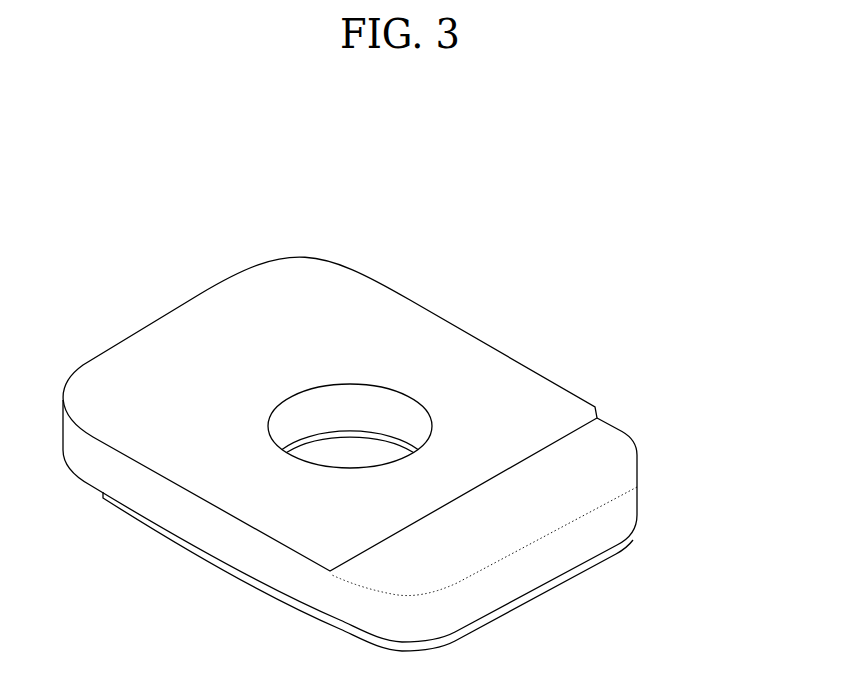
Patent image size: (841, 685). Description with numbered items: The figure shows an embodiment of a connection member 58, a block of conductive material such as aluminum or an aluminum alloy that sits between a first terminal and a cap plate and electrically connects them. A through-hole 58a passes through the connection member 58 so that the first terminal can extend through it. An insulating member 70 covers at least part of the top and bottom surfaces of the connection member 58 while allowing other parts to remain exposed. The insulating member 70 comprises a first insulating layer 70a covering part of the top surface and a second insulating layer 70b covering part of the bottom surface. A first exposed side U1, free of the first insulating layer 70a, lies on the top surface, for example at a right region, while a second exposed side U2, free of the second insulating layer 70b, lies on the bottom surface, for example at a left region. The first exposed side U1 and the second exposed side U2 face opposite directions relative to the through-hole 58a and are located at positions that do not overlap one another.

The connection member 58 is at (363, 451).
The through-hole 58a is at (360, 451).
The insulating member 70 is at (348, 455).
The first insulating layer 70a is at (462, 348).
The second insulating layer 70b is at (317, 620).
The first exposed side U1 is at (597, 452).
The second exposed side U2 is at (93, 487).